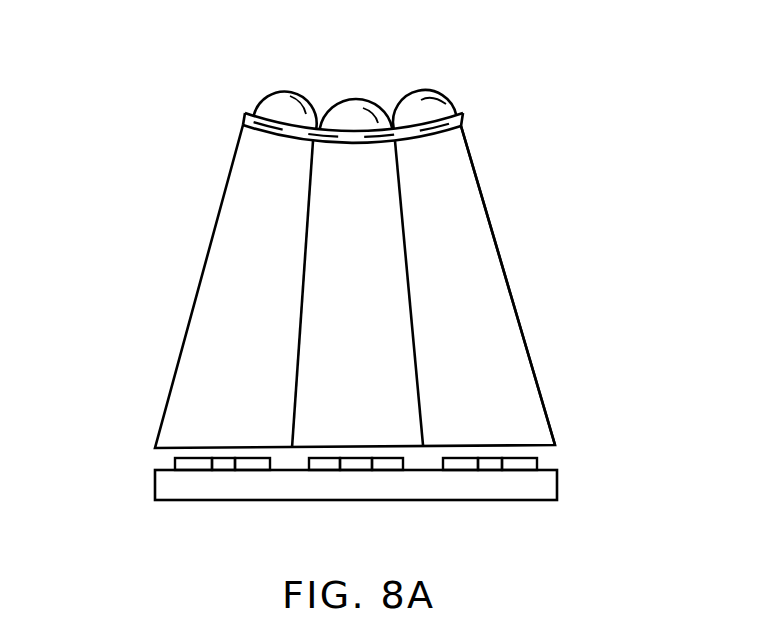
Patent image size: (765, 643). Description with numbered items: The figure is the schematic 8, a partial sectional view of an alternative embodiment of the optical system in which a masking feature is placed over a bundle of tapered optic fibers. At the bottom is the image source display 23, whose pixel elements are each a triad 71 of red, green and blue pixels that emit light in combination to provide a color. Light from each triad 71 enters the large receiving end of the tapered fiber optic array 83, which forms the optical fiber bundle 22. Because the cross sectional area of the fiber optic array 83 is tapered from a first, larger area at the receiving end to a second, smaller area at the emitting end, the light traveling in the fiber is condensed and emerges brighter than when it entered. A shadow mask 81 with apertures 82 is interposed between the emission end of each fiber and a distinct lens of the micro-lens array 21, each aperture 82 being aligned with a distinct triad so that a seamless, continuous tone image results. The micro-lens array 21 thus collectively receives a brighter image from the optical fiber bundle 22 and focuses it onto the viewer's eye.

The schematic 8 is at (117, 521).
The micro-lens array 21 is at (427, 91).
The optical fiber bundle 22 is at (493, 218).
The image source display 23 is at (513, 490).
The triad 71 is at (537, 463).
The shadow mask 81 is at (462, 108).
The apertures 82 is at (283, 118).
The fiber optic array 83 is at (502, 342).